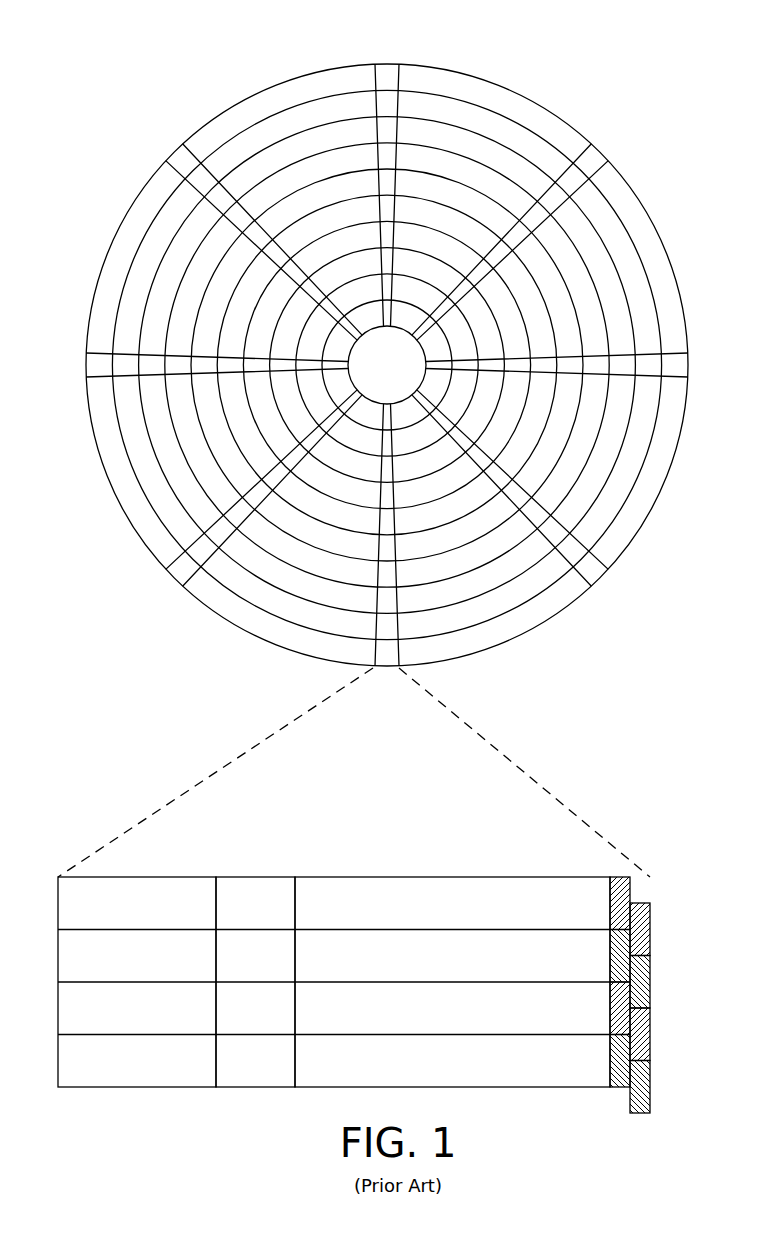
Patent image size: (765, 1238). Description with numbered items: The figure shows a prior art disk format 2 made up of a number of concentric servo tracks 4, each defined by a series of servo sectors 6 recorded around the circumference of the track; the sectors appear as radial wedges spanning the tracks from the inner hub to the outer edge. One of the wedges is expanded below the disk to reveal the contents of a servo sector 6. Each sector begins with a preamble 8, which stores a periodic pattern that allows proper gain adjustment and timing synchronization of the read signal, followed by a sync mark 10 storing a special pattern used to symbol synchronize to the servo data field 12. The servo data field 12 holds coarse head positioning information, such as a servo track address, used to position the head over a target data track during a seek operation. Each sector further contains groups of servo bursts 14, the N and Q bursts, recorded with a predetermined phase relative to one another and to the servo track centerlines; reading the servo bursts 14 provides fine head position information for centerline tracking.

The disk format 2 is at (387, 376).
The servo tracks 4 is at (489, 125).
The servo sector 6 is at (387, 376).
The preamble 8 is at (145, 877).
The sync mark 10 is at (258, 877).
The servo data field 12 is at (441, 877).
The servo bursts 14 is at (645, 877).